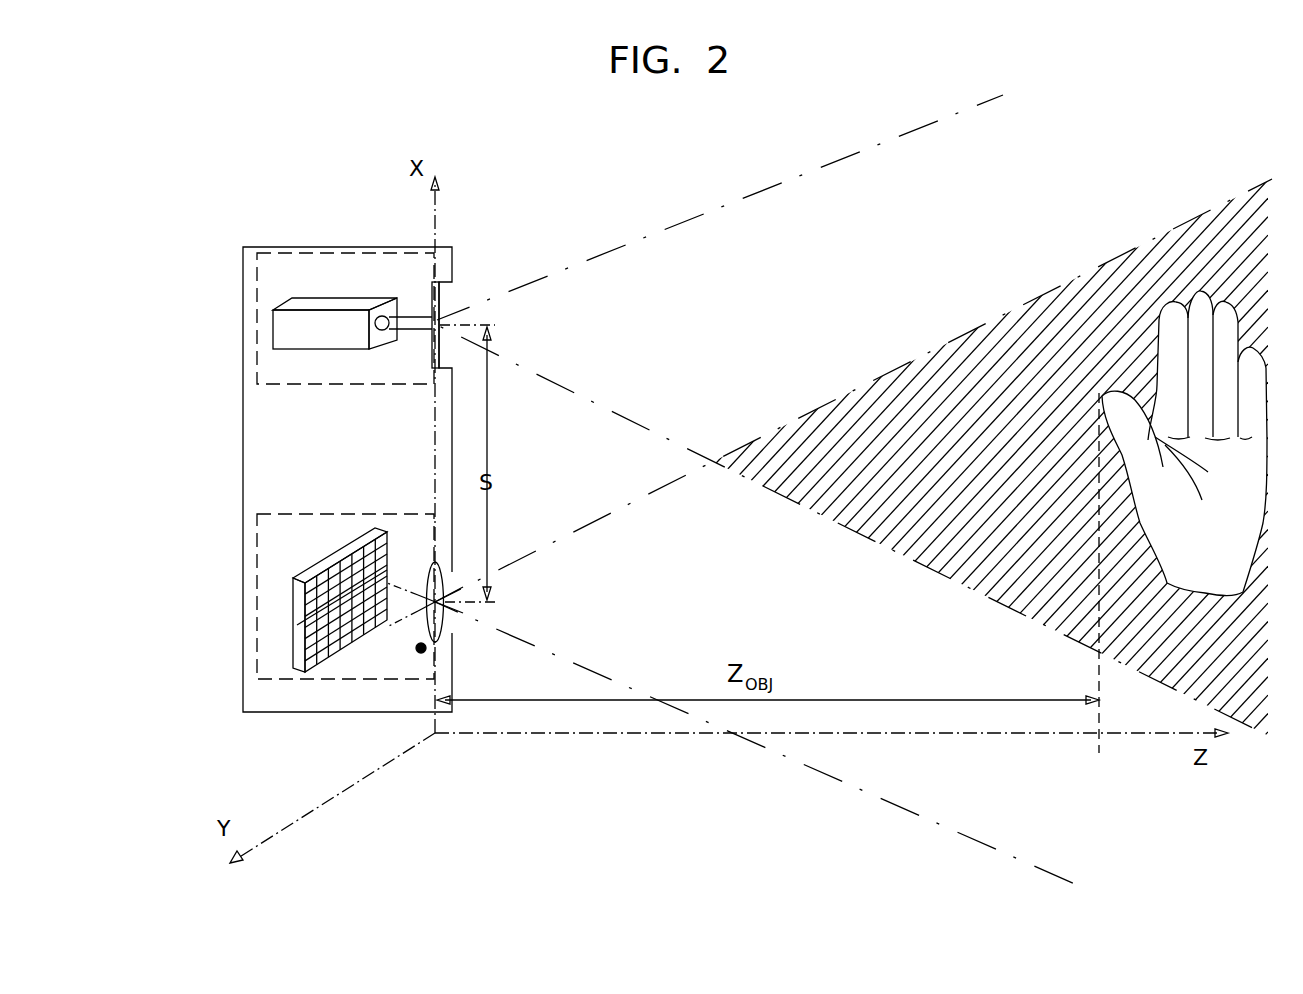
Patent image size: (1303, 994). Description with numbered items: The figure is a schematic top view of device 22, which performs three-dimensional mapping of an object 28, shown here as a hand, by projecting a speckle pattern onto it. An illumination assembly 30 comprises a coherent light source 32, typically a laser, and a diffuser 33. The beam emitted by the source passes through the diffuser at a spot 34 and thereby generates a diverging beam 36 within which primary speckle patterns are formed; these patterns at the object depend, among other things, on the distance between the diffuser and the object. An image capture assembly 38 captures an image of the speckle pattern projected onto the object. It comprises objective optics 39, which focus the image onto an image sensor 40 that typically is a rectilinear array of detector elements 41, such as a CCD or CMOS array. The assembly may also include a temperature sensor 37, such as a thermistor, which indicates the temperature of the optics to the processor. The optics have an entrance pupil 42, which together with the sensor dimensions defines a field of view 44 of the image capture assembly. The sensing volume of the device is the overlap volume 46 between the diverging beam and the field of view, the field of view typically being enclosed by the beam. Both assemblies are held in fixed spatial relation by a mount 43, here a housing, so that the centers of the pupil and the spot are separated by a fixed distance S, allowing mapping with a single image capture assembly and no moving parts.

The device 22 is at (248, 158).
The object 28 is at (1258, 362).
The illumination assembly 30 is at (292, 385).
The coherent light source 32 is at (323, 300).
The diffuser 33 is at (432, 352).
The spot 34 is at (440, 320).
The diverging beam 36 is at (822, 168).
The temperature sensor 37 is at (421, 653).
The image capture assembly 38 is at (363, 514).
The objective optics 39 is at (428, 578).
The image sensor 40 is at (328, 565).
The detector elements 41 is at (297, 625).
The entrance pupil 42 is at (445, 617).
The mount 43 is at (317, 247).
The field of view 44 is at (590, 527).
The overlap volume 46 is at (981, 441).